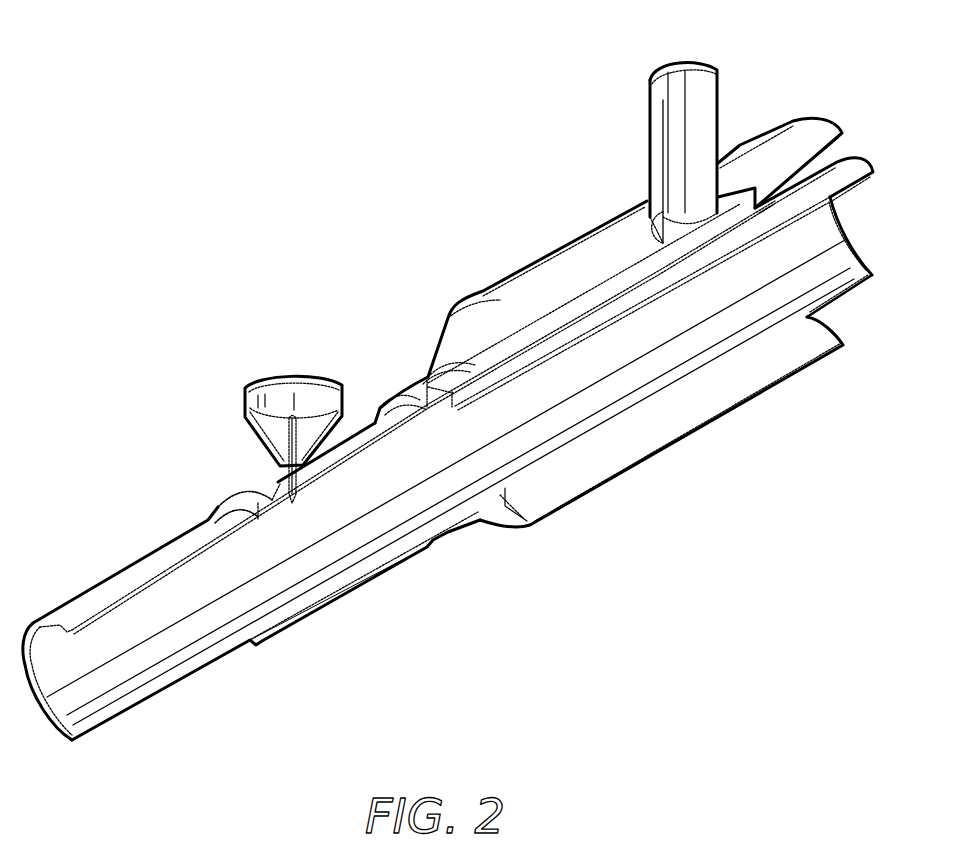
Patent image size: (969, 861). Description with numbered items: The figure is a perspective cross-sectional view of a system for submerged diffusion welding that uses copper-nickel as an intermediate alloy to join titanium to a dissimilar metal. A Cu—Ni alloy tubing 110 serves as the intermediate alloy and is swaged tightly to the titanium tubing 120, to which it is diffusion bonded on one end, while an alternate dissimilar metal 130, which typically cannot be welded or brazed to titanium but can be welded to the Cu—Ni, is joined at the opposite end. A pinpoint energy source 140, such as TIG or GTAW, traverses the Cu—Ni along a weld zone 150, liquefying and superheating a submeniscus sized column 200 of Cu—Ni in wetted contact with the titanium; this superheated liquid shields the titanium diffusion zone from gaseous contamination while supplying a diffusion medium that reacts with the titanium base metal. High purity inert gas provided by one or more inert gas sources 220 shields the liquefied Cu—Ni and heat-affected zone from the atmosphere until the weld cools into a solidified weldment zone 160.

The submeniscus sized column 200 is at (248, 128).
The Cu—Ni alloy tubing 110 is at (358, 583).
The titanium tubing 120 is at (100, 590).
The alternate dissimilar metal 130 is at (547, 257).
The pinpoint energy source 140 is at (257, 442).
The weld zone 150 is at (240, 497).
The solidified weldment zone 160 is at (267, 483).
The inert gas source 220 is at (287, 375).